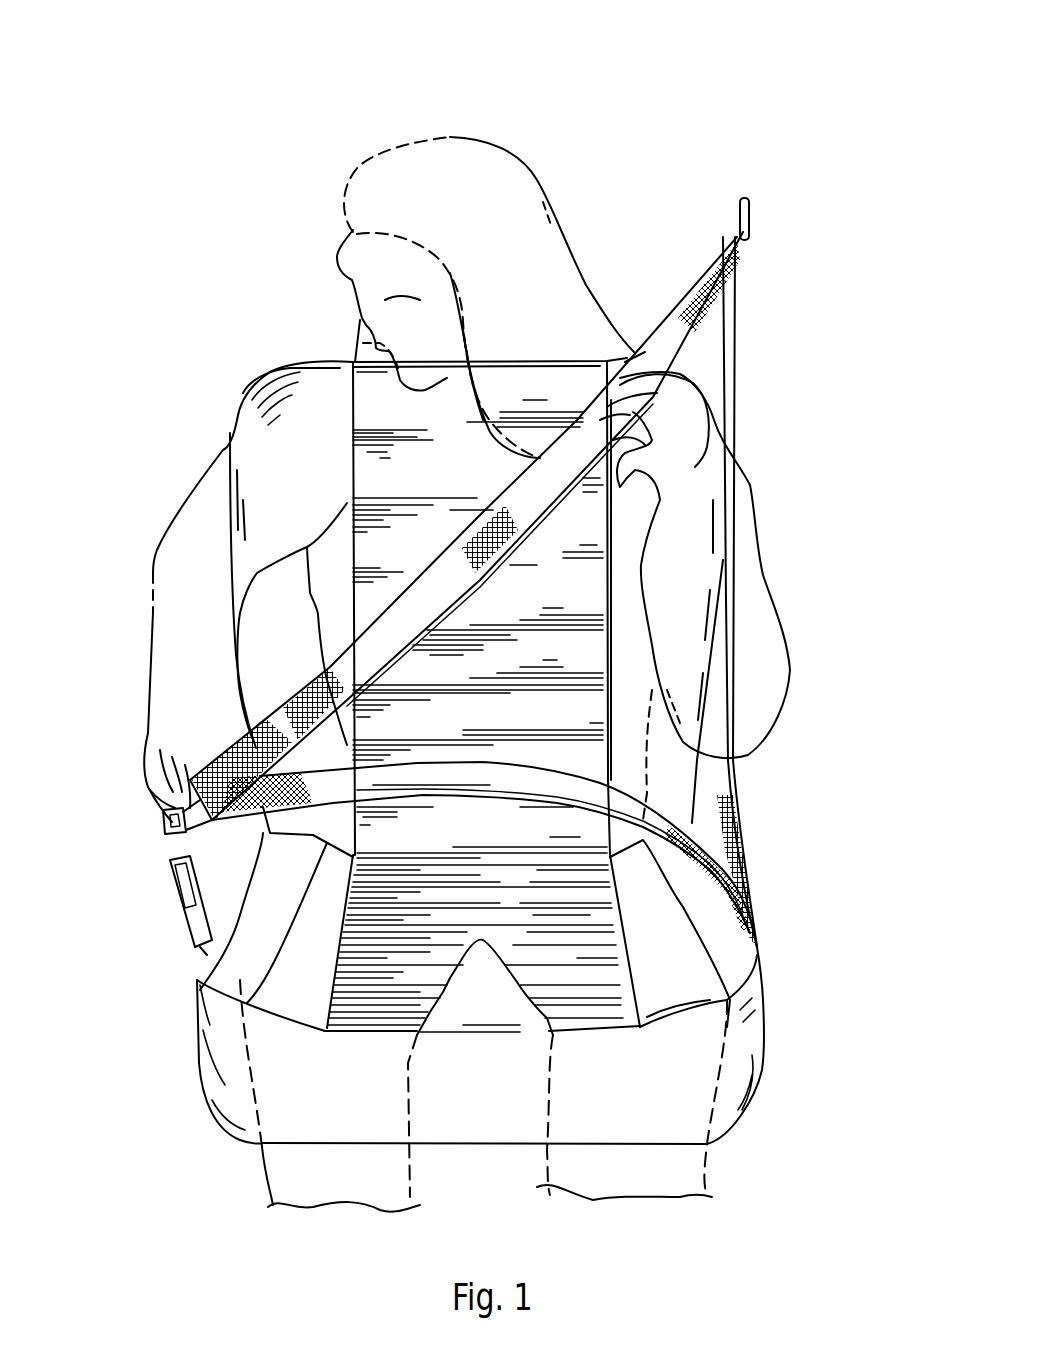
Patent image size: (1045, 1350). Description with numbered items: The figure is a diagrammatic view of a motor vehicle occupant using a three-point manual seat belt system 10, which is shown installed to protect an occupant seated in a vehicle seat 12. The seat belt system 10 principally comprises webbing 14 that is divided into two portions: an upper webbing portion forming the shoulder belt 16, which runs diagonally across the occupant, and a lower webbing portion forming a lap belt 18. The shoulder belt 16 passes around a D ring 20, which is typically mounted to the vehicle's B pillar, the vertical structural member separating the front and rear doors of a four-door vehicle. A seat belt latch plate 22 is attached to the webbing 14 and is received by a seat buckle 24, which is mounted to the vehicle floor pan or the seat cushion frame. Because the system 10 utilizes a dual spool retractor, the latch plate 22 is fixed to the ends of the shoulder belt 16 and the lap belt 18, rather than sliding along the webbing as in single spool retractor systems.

The seat belt system 10 is at (720, 80).
The vehicle seat 12 is at (750, 1057).
The webbing 14 is at (297, 743).
The shoulder belt 16 is at (325, 690).
The lap belt 18 is at (612, 848).
The D ring 20 is at (750, 233).
The seat belt latch plate 22 is at (195, 830).
The seat buckle 24 is at (178, 918).